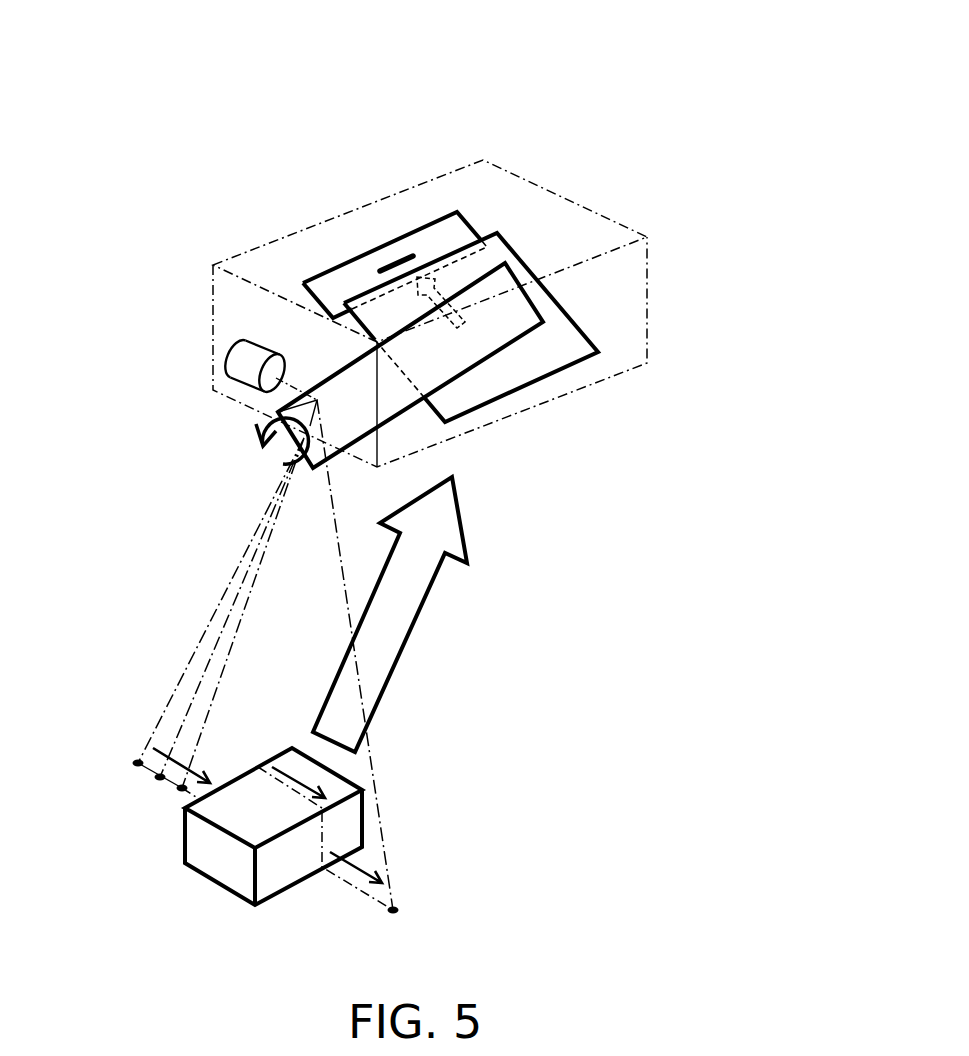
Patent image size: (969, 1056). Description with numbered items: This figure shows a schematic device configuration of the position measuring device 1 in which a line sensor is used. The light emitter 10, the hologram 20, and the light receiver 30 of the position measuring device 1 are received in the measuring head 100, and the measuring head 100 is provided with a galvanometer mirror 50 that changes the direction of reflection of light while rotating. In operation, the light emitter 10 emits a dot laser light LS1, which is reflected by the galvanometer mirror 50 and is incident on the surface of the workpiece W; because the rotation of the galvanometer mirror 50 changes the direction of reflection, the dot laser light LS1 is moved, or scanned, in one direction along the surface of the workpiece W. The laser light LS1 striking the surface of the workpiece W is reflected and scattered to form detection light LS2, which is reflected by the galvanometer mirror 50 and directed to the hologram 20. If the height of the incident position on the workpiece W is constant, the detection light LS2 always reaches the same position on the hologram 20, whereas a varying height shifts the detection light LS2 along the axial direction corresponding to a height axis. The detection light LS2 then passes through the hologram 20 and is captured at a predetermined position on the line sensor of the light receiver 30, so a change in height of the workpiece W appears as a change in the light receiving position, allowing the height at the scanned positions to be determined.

The position measuring device 1 is at (573, 102).
The light emitter 10 is at (248, 365).
The hologram 20 is at (368, 315).
The light receiver 30 is at (418, 245).
The galvanometer mirror 50 is at (433, 365).
The measuring head 100 is at (647, 287).
The laser light LS1 is at (238, 561).
The detection light LS2 is at (408, 590).
The workpiece W is at (198, 845).